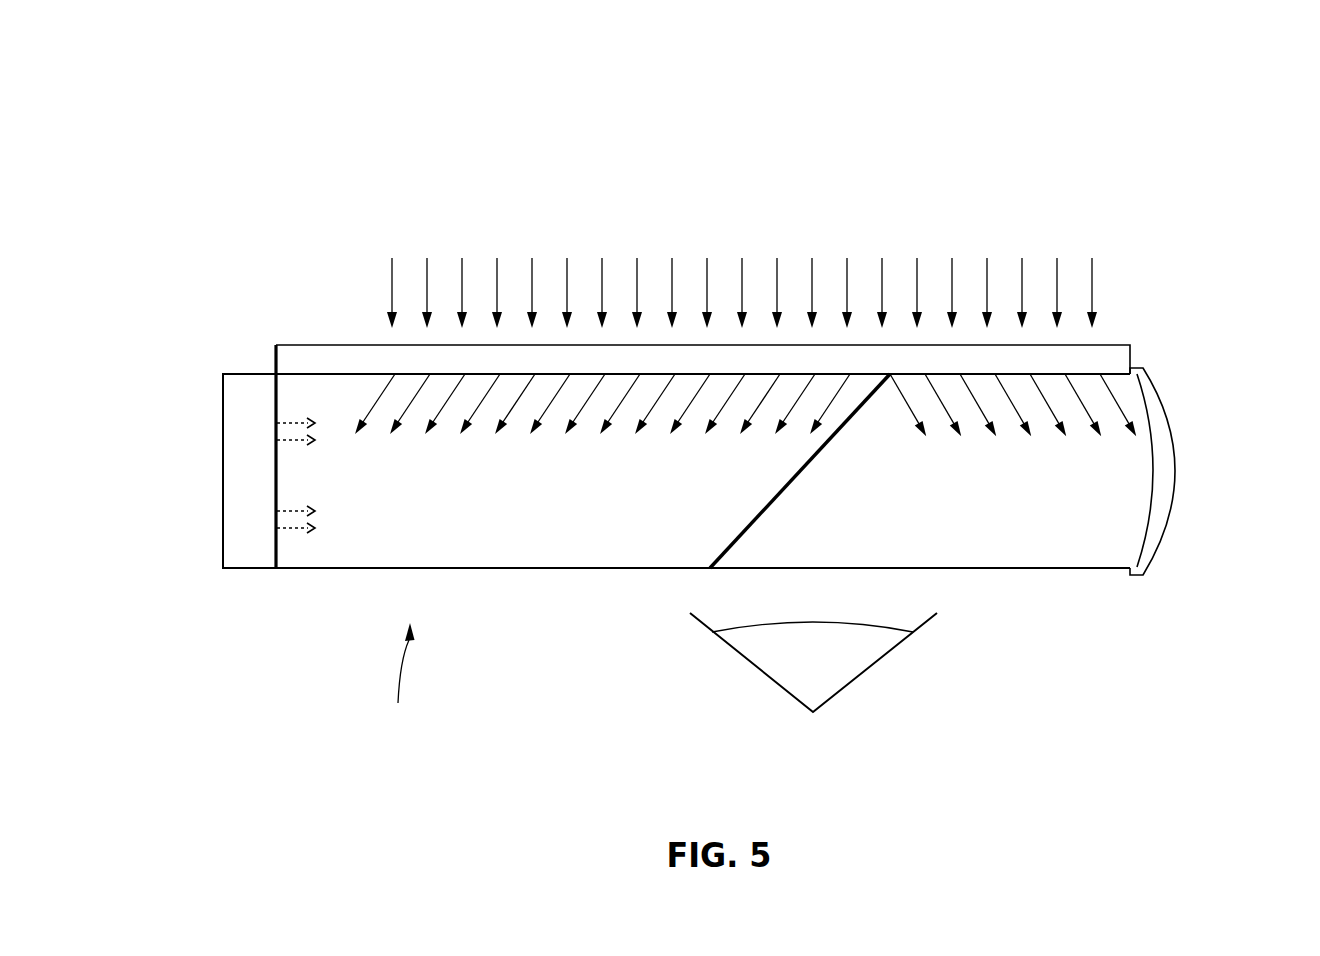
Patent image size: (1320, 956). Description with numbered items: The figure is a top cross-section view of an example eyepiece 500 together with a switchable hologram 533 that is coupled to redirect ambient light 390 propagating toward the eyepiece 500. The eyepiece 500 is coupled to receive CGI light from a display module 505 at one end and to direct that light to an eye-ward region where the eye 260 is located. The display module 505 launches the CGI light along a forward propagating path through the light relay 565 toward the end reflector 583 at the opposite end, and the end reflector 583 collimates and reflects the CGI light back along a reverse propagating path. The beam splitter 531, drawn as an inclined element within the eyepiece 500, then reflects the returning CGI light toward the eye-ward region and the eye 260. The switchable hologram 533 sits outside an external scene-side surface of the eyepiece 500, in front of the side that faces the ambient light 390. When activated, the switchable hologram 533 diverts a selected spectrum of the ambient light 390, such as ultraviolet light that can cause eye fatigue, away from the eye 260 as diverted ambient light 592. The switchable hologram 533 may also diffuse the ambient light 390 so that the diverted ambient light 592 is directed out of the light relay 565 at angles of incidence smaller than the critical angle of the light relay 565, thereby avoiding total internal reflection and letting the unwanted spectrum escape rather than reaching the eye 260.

The eyepiece 500 is at (1103, 70).
The switchable hologram 533 is at (285, 360).
The ambient light 390 is at (1147, 338).
The display module 505 is at (233, 475).
The light relay 565 is at (313, 568).
The diverted ambient light 592 is at (587, 447).
The beam splitter 531 is at (852, 415).
The end reflector 583 is at (1157, 530).
The eye 260 is at (813, 662).